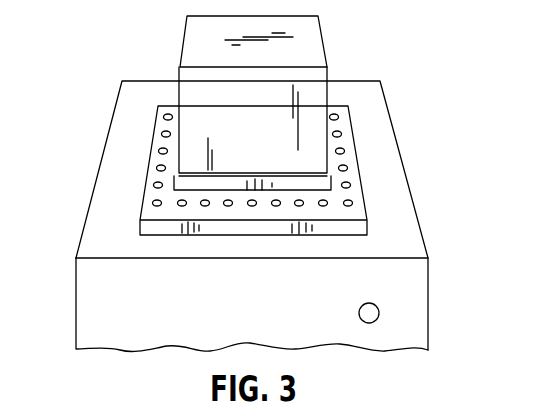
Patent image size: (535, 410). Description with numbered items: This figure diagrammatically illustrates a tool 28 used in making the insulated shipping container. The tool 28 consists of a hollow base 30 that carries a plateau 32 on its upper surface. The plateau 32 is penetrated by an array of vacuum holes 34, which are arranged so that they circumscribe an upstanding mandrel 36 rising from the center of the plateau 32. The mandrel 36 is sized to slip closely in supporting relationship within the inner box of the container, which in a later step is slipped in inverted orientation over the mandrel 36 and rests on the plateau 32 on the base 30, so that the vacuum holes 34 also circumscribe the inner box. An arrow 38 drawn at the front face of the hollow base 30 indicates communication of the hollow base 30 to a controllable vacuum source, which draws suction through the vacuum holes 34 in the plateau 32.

The tool 28 is at (416, 155).
The hollow base 30 is at (420, 273).
The plateau 32 is at (360, 213).
The vacuum holes 34 is at (158, 151).
The upstanding mandrel 36 is at (262, 126).
The arrow 38 is at (372, 320).